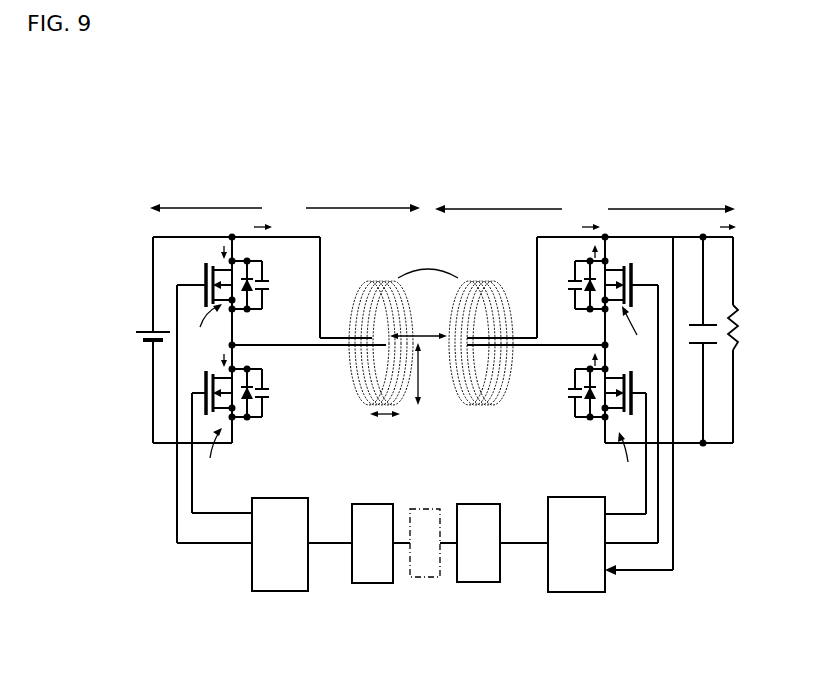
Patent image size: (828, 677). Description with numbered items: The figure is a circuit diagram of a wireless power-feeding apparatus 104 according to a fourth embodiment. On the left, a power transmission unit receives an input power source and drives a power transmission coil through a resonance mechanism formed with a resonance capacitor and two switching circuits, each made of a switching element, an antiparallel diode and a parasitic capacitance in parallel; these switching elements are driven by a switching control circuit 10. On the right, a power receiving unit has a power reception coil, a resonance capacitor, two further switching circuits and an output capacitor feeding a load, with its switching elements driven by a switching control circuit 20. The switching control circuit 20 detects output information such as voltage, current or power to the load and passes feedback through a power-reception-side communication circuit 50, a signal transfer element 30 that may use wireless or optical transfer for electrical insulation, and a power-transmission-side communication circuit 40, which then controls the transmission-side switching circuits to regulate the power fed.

The wireless power-feeding apparatus 104 is at (741, 142).
The switching control circuit 10 is at (285, 592).
The switching control circuit 20 is at (578, 592).
The signal transfer element 30 is at (427, 578).
The power-transmission-side communication circuit 40 is at (378, 583).
The power-reception-side communication circuit 50 is at (484, 583).